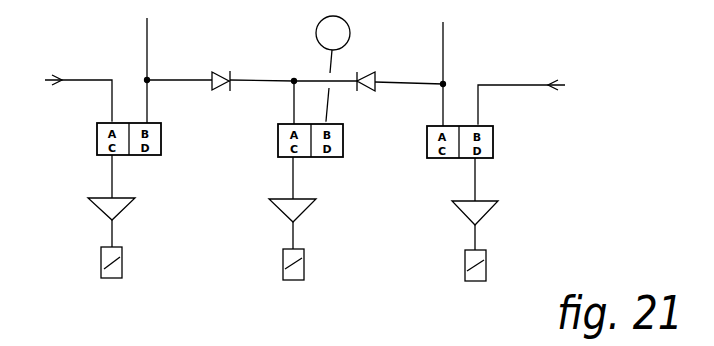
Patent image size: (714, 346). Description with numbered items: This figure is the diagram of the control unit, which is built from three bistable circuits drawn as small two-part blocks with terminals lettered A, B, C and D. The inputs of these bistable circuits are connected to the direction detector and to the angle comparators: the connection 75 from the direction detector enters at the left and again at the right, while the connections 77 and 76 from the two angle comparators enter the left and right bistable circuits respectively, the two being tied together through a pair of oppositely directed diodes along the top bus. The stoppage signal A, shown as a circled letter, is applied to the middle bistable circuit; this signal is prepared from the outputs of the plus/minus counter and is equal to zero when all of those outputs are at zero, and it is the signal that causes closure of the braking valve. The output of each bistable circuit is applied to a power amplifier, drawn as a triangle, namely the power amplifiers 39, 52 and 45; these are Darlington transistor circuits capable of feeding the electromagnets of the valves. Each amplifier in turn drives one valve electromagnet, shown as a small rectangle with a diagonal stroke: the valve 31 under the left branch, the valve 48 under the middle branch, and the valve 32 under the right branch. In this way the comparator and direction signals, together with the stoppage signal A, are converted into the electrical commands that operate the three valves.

The connection between the direction detector and the control unit 75 is at (96, 77).
The connection between an angle comparator and the control unit 77 is at (151, 42).
The connection between an angle comparator and the control unit 76 is at (447, 40).
The stoppage signal A is at (333, 68).
The amplifier 39 is at (118, 230).
The valve 31 is at (128, 265).
The amplifier 52 is at (299, 234).
The valve 48 is at (309, 265).
The amplifier 45 is at (481, 237).
The valve 32 is at (491, 267).